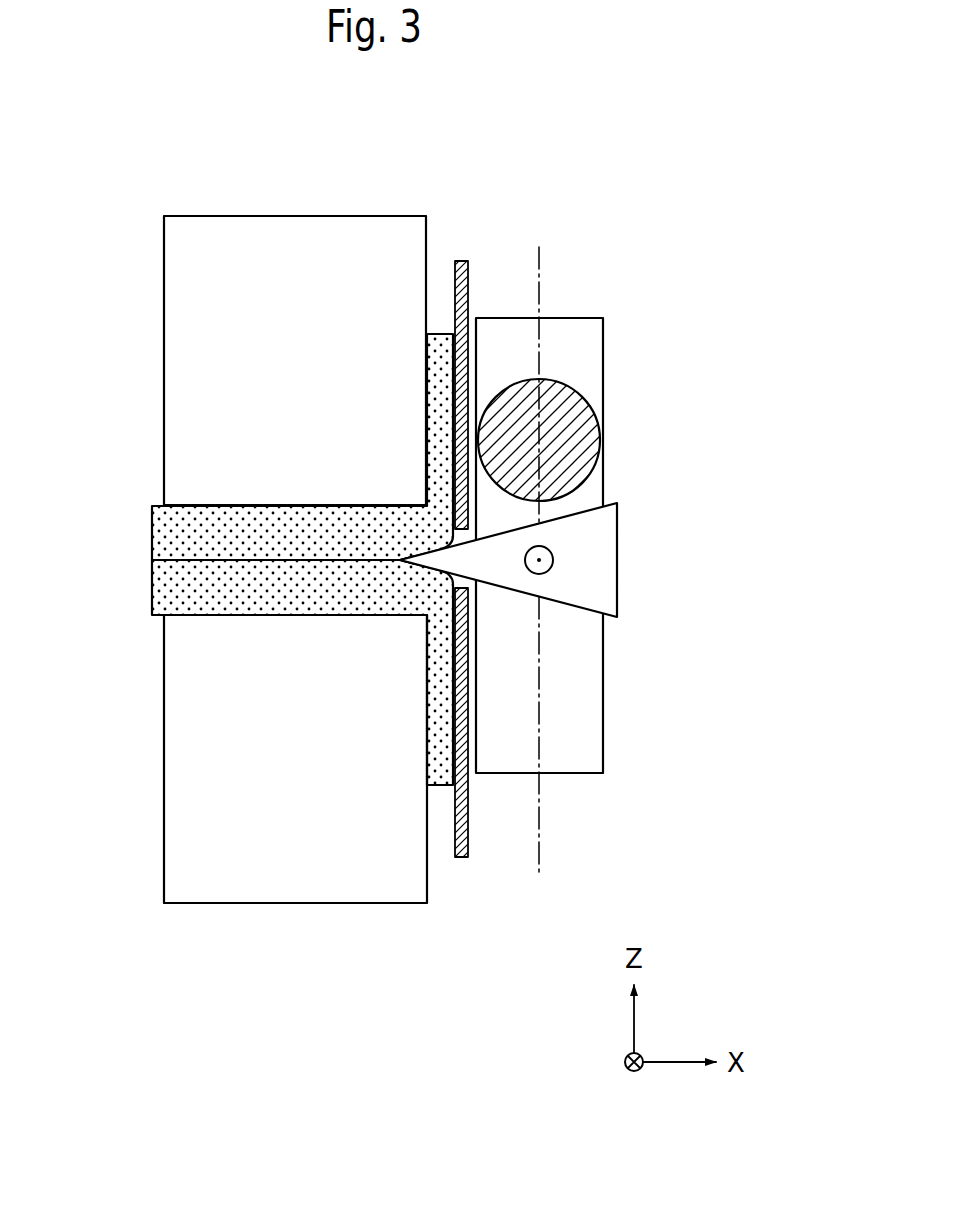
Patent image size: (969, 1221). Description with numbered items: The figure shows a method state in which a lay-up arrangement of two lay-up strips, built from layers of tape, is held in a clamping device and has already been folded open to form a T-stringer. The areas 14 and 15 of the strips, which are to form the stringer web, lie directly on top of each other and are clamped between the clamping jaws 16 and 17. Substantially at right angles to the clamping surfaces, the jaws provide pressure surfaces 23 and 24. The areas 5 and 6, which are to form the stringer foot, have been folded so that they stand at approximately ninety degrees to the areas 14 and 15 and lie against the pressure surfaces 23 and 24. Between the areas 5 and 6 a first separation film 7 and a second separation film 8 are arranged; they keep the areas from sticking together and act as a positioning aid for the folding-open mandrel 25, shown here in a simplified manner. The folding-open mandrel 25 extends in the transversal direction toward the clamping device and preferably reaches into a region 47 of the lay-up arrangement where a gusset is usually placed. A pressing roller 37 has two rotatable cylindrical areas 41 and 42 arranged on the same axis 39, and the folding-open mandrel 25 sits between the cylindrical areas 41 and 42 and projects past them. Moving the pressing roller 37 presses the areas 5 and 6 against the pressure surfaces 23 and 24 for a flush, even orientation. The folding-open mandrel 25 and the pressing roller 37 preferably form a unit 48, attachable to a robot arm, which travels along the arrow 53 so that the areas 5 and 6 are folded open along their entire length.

The area of the first lay-up strip 5 is at (437, 410).
The area of the second lay-up strip 6 is at (434, 725).
The first separation film 7 is at (468, 273).
The second separation film 8 is at (468, 830).
The area of the first lay-up strip 14 is at (258, 520).
The area of the second lay-up strip 15 is at (265, 605).
The clamping jaw 16 is at (188, 335).
The clamping jaw 17 is at (188, 790).
The pressure surface 23 is at (430, 231).
The pressure surface 24 is at (431, 886).
The folding-open mandrel 25 is at (621, 527).
The pressing roller 37 is at (606, 347).
The axis 39 is at (542, 258).
The cylindrical area 41 is at (604, 380).
The cylindrical area 42 is at (604, 665).
The region of the lay-up arrangement 47 is at (401, 603).
The unit 48 is at (616, 758).
The arrow 53 is at (554, 560).